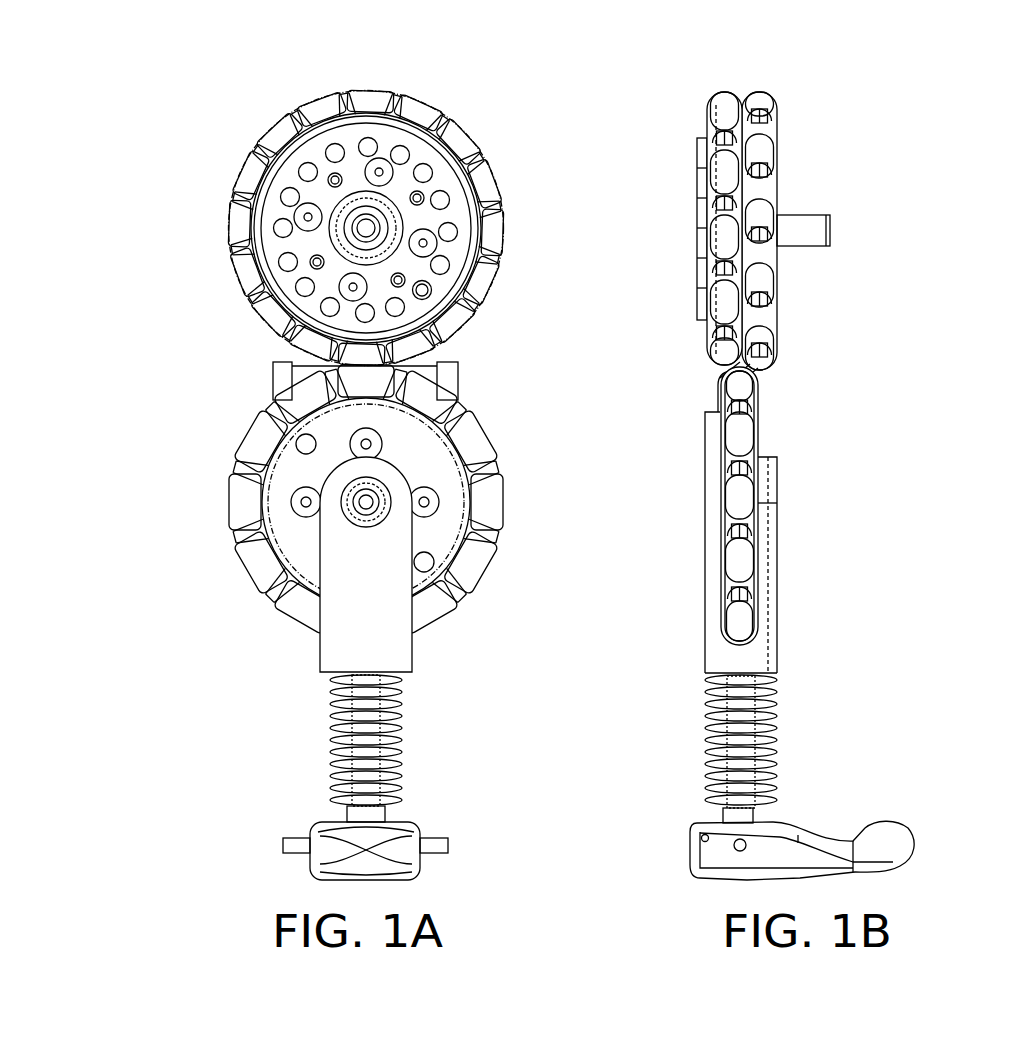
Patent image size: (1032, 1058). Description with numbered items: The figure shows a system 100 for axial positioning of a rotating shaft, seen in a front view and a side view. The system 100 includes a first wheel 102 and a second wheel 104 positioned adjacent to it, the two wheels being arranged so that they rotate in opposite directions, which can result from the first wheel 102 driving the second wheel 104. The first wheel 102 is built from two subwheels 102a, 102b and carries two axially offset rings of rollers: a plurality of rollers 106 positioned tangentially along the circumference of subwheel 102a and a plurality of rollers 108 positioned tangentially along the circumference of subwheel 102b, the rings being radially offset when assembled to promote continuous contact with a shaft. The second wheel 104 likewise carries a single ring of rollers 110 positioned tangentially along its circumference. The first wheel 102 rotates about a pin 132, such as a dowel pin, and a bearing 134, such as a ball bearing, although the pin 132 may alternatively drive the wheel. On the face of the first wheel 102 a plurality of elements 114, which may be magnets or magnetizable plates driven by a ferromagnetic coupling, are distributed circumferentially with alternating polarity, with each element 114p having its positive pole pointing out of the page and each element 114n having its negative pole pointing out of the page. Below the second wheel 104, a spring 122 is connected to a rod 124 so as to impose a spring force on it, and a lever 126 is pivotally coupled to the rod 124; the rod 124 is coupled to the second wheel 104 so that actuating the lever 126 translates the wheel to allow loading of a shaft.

In FIG. 1A, the system 100 is at (126, 127).
In FIG. 1B, the system 100 is at (947, 119).
In FIG. 1A, the first wheel 102 is at (176, 315).
In FIG. 1B, the first wheel 102 is at (772, 78).
In FIG. 1B, the subwheel 102a is at (781, 380).
In FIG. 1B, the subwheel 102b is at (690, 332).
In FIG. 1A, the second wheel 104 is at (163, 489).
In FIG. 1B, the second wheel 104 is at (838, 500).
In FIG. 1A, the rollers 106 is at (463, 138).
In FIG. 1B, the rollers 106 is at (759, 138).
In FIG. 1A, the rollers 108 is at (503, 222).
In FIG. 1B, the rollers 108 is at (716, 220).
In FIG. 1A, the rollers 110 is at (467, 430).
In FIG. 1B, the rollers 110 is at (726, 435).
In FIG. 1A, the element 114 is at (400, 149).
In FIG. 1A, the element 114p is at (281, 228).
In FIG. 1A, the element 114n is at (285, 262).
In FIG. 1A, the spring 122 is at (330, 792).
In FIG. 1B, the spring 122 is at (741, 740).
In FIG. 1A, the rod 124 is at (330, 748).
In FIG. 1B, the rod 124 is at (739, 749).
In FIG. 1A, the lever 126 is at (311, 863).
In FIG. 1B, the lever 126 is at (802, 850).
In FIG. 1B, the pin 132 is at (832, 221).
In FIG. 1A, the bearing 134 is at (358, 196).